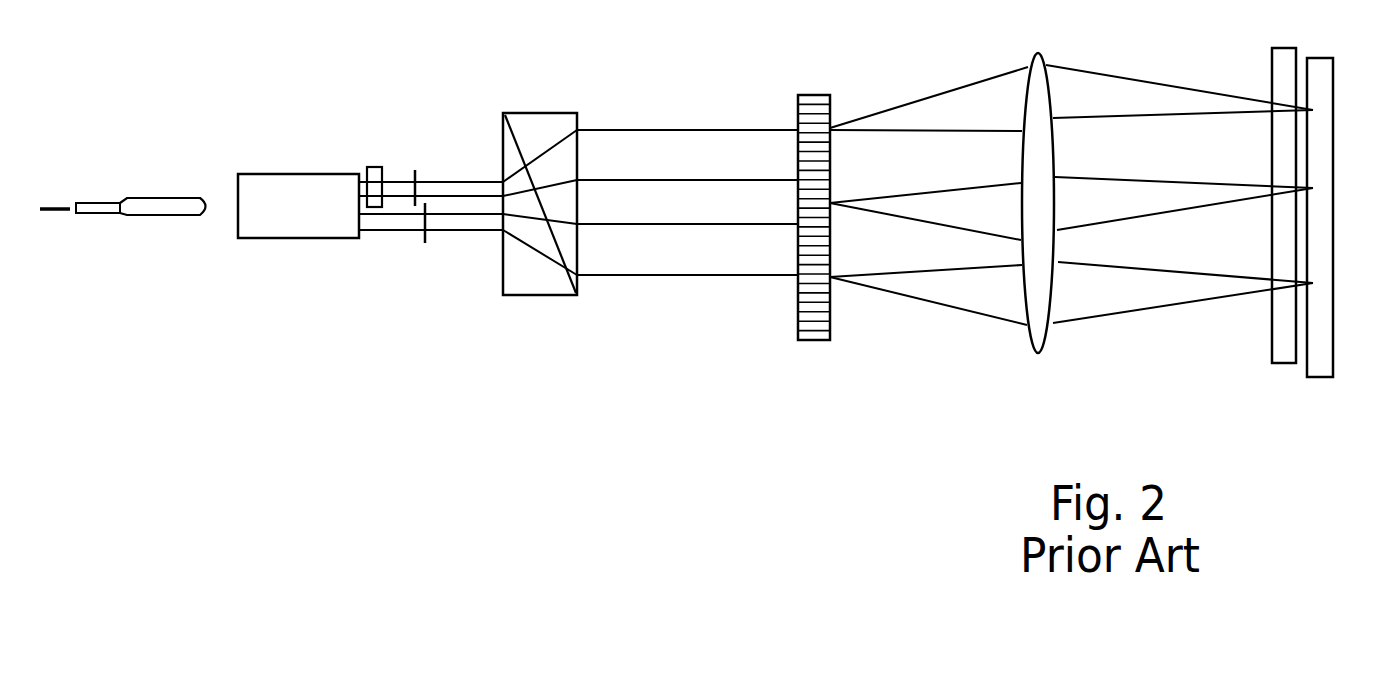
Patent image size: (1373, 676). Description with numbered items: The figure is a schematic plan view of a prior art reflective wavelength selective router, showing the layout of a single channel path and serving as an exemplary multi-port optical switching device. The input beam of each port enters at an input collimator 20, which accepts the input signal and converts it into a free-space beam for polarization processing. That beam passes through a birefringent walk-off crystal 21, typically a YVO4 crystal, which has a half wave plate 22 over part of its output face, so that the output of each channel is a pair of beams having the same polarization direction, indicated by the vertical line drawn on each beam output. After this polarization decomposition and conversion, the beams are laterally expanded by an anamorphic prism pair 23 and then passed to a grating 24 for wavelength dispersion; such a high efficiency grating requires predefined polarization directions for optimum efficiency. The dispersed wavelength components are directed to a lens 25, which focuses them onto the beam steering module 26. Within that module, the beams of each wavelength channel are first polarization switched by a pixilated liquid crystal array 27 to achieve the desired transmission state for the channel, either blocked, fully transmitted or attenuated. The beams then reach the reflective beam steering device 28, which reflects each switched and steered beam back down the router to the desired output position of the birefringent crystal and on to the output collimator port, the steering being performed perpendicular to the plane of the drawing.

The input collimator 20 is at (164, 222).
The birefringent walk-off crystal 21 is at (275, 240).
The half wave plate 22 is at (374, 165).
The anamorphic prism pair 23 is at (503, 283).
The grating 24 is at (797, 335).
The lens 25 is at (1031, 346).
The beam steering module 26 is at (1284, 253).
The pixilated liquid crystal array 27 is at (1272, 333).
The reflective beam steering device 28 is at (1340, 252).